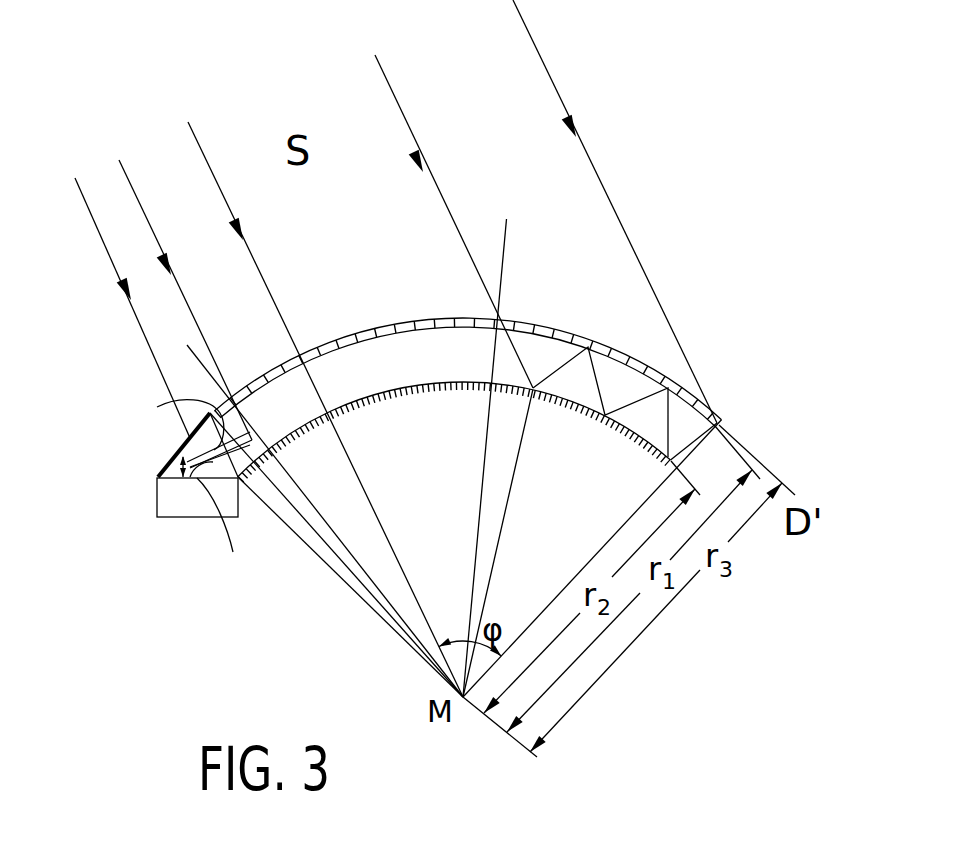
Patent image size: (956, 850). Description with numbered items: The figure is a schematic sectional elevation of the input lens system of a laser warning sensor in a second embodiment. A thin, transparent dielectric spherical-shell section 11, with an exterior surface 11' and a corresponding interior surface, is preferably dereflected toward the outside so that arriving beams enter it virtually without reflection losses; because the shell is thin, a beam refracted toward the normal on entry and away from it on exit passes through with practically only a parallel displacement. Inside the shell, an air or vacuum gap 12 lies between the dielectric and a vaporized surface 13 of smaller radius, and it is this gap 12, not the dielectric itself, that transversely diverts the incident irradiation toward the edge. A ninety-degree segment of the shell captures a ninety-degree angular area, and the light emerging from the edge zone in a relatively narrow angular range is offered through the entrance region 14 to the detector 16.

The spherical-shell section 11 is at (467, 338).
The exterior surface 11' is at (467, 320).
The air or vacuum gap 12 is at (457, 355).
The vaporized surface 13 is at (558, 407).
The detector entrance region 14 is at (160, 470).
The detector 16 is at (173, 503).